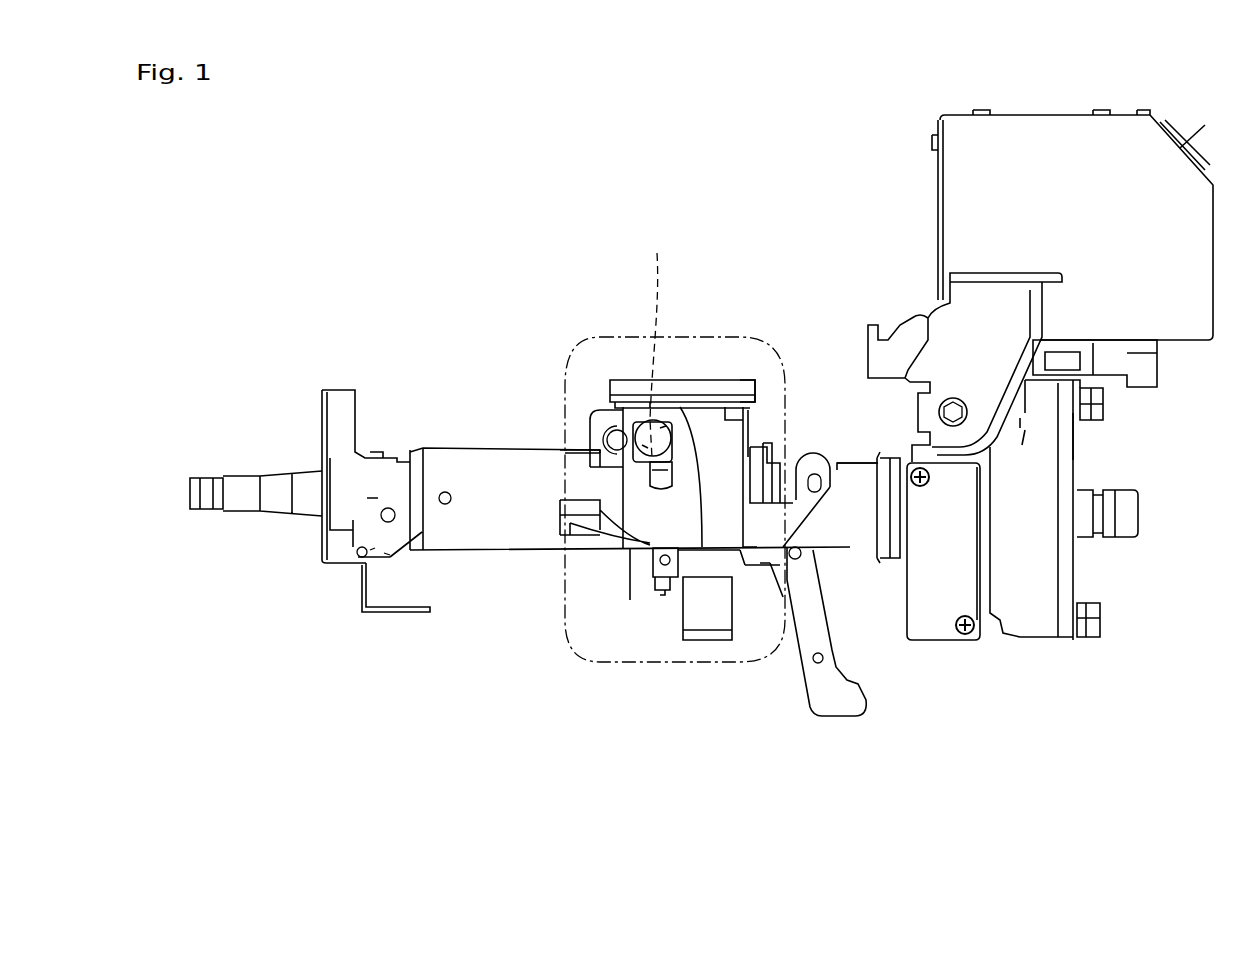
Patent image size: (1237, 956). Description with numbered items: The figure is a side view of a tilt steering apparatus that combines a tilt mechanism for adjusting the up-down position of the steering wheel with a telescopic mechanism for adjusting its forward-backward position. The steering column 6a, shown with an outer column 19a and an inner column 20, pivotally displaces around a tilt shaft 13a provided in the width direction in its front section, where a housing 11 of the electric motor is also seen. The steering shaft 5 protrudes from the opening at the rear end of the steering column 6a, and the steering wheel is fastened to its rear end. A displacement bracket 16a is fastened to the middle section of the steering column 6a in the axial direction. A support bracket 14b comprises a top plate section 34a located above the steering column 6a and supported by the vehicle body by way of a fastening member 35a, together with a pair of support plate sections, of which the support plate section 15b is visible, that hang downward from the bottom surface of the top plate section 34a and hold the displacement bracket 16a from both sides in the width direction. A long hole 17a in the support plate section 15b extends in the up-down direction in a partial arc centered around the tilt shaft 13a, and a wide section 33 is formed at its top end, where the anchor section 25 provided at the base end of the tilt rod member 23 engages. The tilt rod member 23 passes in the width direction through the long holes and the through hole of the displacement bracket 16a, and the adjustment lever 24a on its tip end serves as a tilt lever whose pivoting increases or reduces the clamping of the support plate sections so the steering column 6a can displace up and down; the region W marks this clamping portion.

The steering shaft 5 is at (280, 493).
The steering column 6a is at (446, 442).
The outer column 19a is at (460, 537).
The clamp region W is at (702, 337).
The fastening member 35a is at (707, 393).
The support bracket 14b is at (737, 373).
The support plate section 15b is at (718, 503).
The anchor section 25 is at (617, 427).
The wide section 33 is at (643, 421).
The tilt rod member 23 is at (656, 342).
The long hole 17a is at (668, 487).
The top plate section 34a is at (747, 390).
The inner column 20 is at (843, 530).
The adjustment lever 24a is at (815, 635).
The housing 11 is at (950, 555).
The tilt shaft 13a is at (967, 403).
The displacement bracket 16a is at (595, 447).